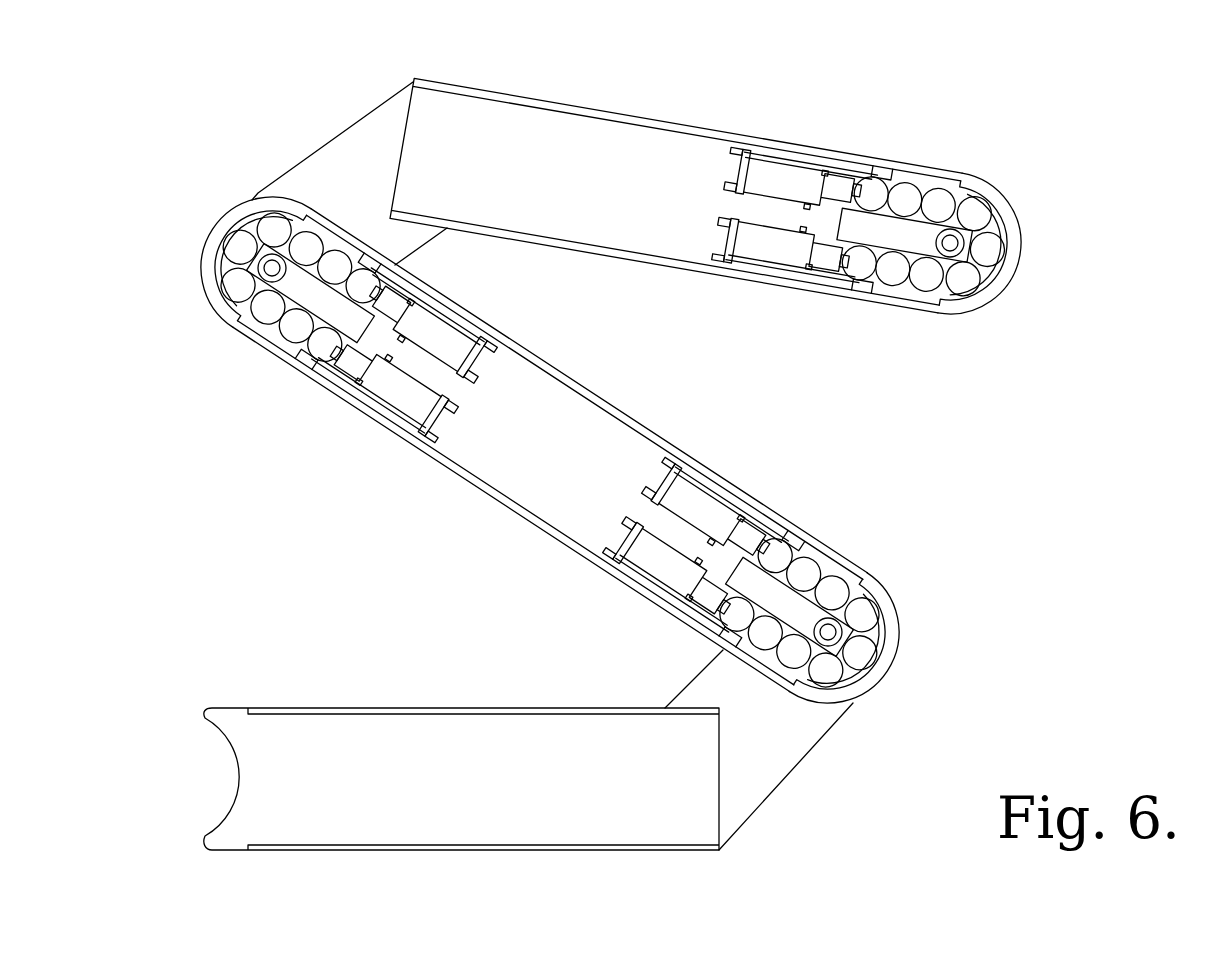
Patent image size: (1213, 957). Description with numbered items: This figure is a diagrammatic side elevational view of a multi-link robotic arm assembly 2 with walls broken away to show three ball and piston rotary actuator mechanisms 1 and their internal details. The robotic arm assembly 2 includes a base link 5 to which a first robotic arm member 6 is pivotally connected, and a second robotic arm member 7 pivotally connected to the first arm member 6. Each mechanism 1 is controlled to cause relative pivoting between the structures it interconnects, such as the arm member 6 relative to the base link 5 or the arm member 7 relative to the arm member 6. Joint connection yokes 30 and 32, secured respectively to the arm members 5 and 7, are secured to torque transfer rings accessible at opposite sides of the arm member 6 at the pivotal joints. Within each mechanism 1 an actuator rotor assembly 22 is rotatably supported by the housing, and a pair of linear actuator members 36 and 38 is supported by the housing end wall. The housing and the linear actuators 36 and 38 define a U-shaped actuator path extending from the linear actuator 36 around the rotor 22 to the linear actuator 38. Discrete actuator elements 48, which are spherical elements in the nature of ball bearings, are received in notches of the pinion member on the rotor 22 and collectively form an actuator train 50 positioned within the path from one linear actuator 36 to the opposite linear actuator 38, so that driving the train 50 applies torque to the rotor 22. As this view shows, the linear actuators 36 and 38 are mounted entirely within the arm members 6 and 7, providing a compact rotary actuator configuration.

The ball and piston rotary actuator mechanism 1 is at (262, 349).
The robotic arm assembly 2 is at (378, 568).
The base link 5 is at (377, 832).
The first robotic arm member 6 is at (597, 416).
The second robotic arm member 7 is at (630, 122).
The actuator rotor assembly 22 is at (254, 260).
The joint connection yoke 30 is at (768, 790).
The joint connection yoke 32 is at (362, 112).
The linear actuator member 36 is at (438, 312).
The linear actuator member 38 is at (378, 436).
The actuator elements 48 is at (243, 291).
The actuator train 50 is at (302, 240).